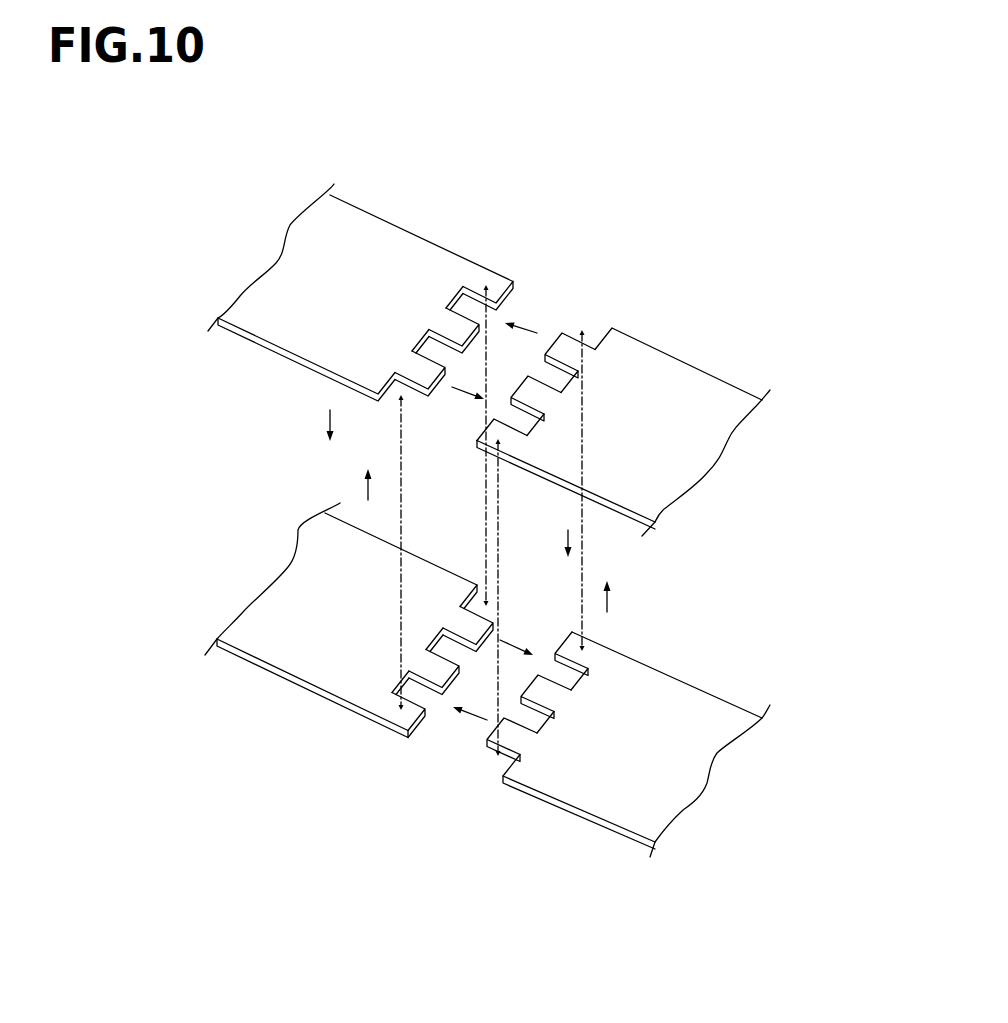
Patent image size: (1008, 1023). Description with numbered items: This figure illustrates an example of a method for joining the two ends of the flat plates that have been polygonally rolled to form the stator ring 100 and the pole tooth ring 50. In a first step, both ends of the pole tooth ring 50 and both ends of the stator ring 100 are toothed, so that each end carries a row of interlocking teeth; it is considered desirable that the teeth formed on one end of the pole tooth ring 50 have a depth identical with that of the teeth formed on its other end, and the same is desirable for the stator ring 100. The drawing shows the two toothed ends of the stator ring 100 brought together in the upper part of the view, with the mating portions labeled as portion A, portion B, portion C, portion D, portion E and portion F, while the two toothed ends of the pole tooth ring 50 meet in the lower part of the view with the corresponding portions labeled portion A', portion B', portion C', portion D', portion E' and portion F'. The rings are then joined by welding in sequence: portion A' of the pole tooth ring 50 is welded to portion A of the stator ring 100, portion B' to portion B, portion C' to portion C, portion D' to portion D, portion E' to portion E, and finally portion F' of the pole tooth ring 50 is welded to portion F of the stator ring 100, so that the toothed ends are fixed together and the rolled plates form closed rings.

The stator ring 100 is at (494, 353).
The pole tooth ring 50 is at (487, 743).
The portion A of the stator ring A is at (482, 461).
The portion B of the stator ring B is at (420, 411).
The portion C of the stator ring C is at (499, 407).
The portion D of the stator ring D is at (474, 343).
The portion E of the stator ring E is at (570, 322).
The portion F of the stator ring F is at (502, 260).
The portion A' of the pole tooth ring A' is at (394, 746).
The portion B' of the pole tooth ring B' is at (490, 778).
The portion C' of the pole tooth ring C' is at (434, 707).
The portion D' of the pole tooth ring D' is at (546, 656).
The portion E' of the pole tooth ring E' is at (493, 597).
The portion F' of the pole tooth ring F' is at (610, 636).